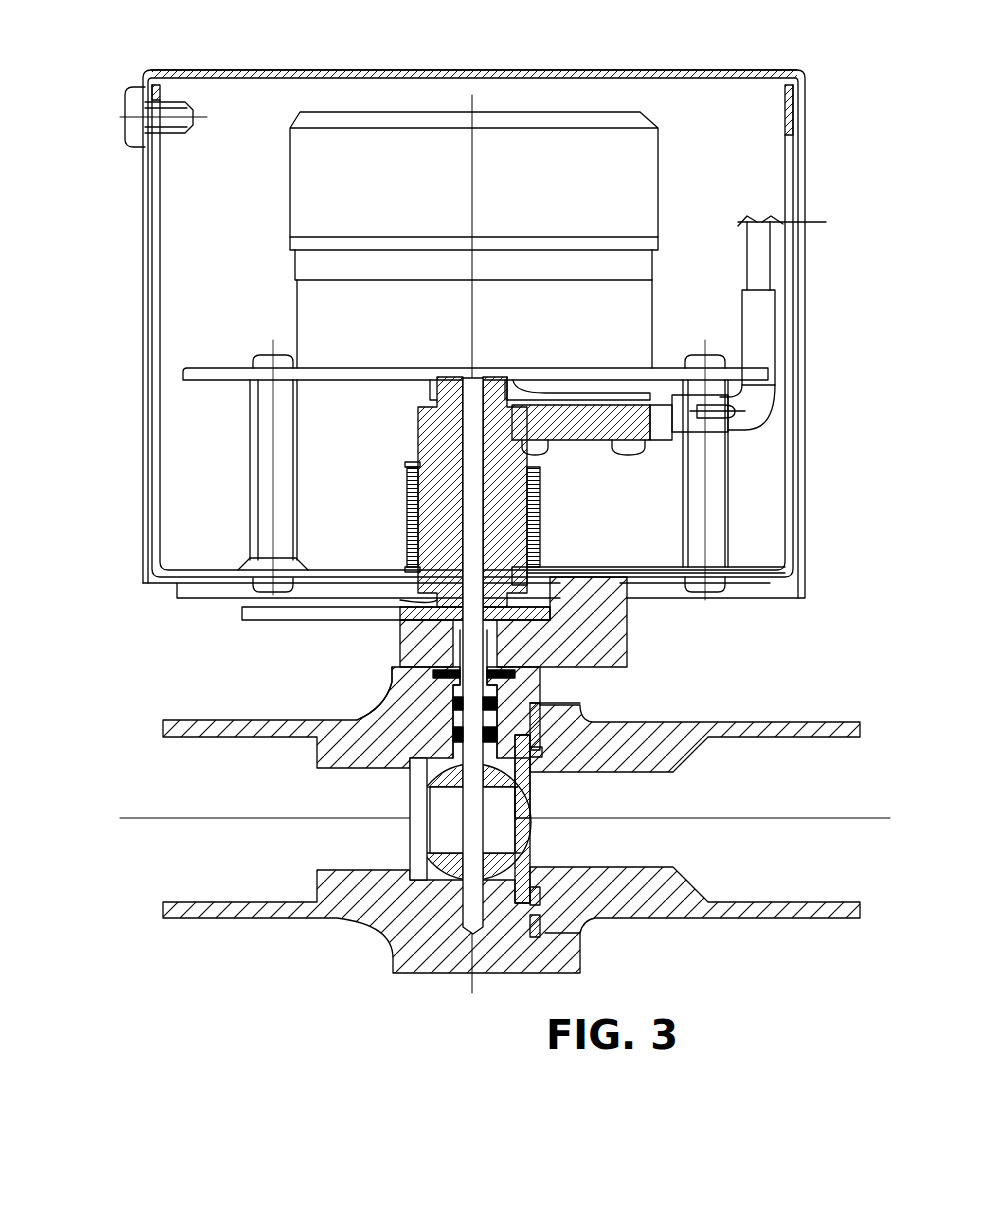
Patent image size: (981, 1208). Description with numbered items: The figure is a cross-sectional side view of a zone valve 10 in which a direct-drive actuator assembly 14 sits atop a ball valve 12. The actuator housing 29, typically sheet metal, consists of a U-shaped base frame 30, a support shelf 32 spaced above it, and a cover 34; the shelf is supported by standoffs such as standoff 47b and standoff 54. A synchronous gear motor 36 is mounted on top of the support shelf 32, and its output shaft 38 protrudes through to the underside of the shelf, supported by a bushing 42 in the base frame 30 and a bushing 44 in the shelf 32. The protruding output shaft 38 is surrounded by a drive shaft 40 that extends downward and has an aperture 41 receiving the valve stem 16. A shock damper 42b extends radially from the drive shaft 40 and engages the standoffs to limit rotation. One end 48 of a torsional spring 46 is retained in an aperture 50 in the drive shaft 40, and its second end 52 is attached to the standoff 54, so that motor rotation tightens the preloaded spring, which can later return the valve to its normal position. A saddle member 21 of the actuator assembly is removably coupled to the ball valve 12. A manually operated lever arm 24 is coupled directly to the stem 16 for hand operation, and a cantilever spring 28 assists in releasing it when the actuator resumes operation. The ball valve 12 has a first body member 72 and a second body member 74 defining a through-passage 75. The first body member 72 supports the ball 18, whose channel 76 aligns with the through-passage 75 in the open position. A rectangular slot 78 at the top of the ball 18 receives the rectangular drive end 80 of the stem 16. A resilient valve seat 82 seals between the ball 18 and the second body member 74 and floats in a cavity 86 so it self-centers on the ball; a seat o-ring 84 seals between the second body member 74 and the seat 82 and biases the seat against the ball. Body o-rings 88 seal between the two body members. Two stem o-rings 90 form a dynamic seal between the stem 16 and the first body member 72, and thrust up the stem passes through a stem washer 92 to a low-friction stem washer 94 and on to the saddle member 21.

The zone valve 10 is at (90, 58).
The ball valve 12 is at (822, 644).
The actuator assembly 14 is at (830, 134).
The valve stem 16 is at (482, 643).
The ball 18 is at (473, 821).
The saddle member 21 is at (628, 622).
The lever arm 24 is at (276, 612).
The cantilever spring 28 is at (418, 600).
The actuator housing 29 is at (132, 272).
The U-shaped base frame 30 is at (160, 437).
The support shelf 32 is at (204, 372).
The cover 34 is at (233, 72).
The synchronous gear motor 36 is at (628, 181).
The output shaft 38 is at (432, 440).
The drive shaft 40 is at (410, 495).
The aperture 41 is at (480, 516).
The bushing 42 is at (532, 570).
The shock damper 42b is at (622, 432).
The bushing 44 is at (440, 380).
The torsional spring 46 is at (542, 526).
The standoff 47b is at (265, 500).
The spring end 48 is at (412, 463).
The aperture 50 is at (412, 530).
The second spring end 52 is at (648, 572).
The standoff 54 is at (718, 503).
The first body member 72 is at (341, 912).
The second body member 74 is at (675, 905).
The through-passage 75 is at (840, 860).
The ball channel 76 is at (522, 840).
The rectangular slot 78 is at (425, 775).
The rectangular drive end 80 is at (474, 800).
The valve seat 82 is at (527, 780).
The seat o-ring 84 is at (542, 750).
The cavity 86 is at (541, 726).
The body o-rings 88 is at (552, 705).
The stem o-rings 90 is at (452, 735).
The stem washer 92 is at (400, 672).
The low coefficient of friction stem washer 94 is at (505, 673).